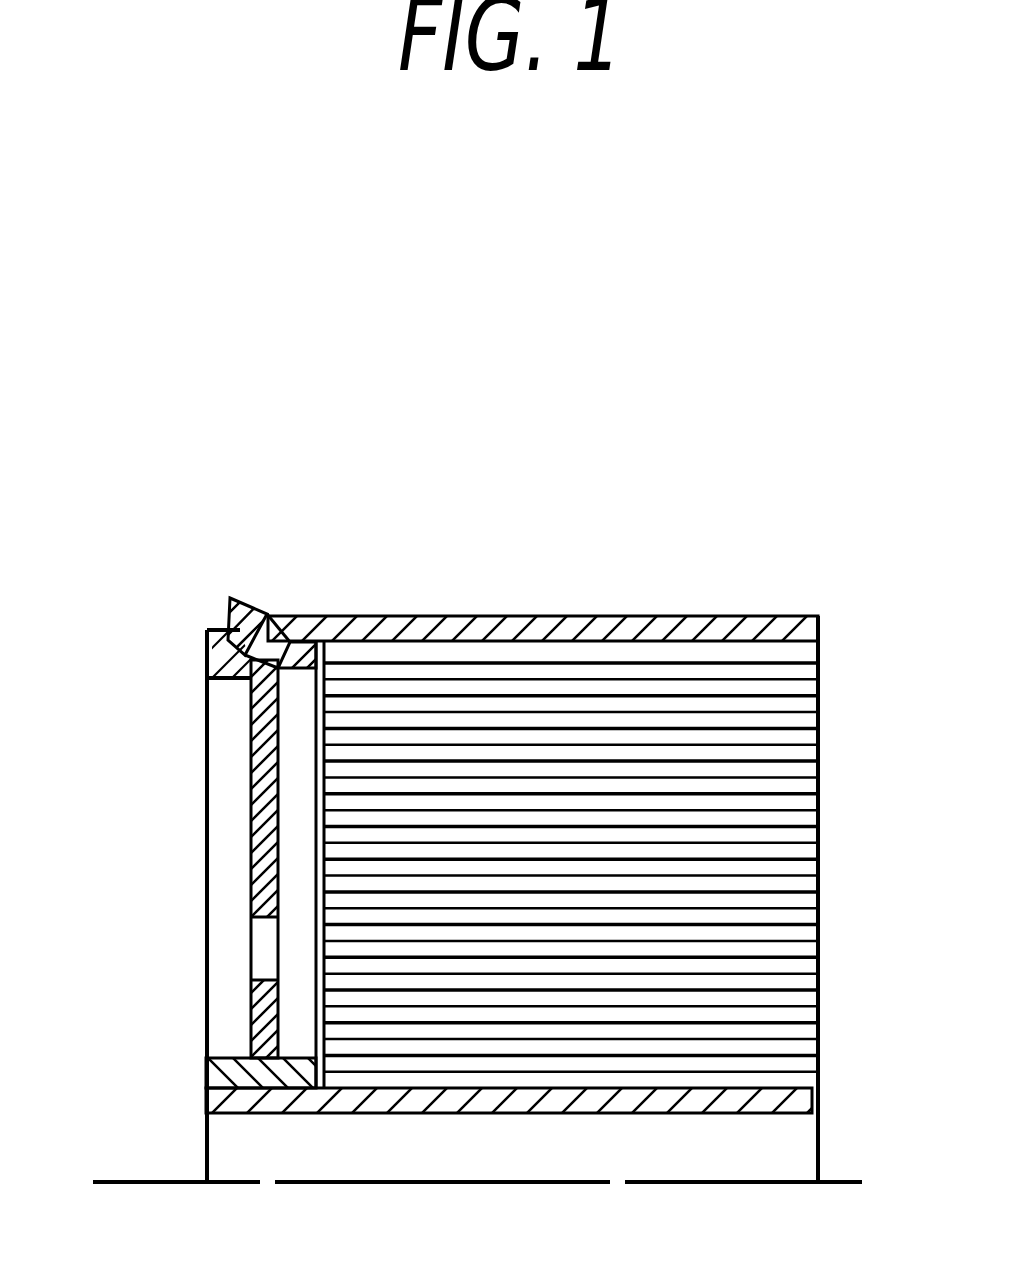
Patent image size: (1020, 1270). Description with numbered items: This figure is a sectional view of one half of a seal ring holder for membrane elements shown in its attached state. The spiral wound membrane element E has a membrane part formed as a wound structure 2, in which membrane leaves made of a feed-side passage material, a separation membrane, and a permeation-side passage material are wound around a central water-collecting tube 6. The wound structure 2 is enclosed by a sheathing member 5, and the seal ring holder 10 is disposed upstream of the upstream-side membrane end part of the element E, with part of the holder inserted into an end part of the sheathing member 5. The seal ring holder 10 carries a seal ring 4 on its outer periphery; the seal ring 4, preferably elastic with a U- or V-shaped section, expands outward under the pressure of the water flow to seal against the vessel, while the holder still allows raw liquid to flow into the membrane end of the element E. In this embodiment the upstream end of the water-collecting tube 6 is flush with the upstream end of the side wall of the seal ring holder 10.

The wound structure 2 is at (567, 762).
The seal ring 4 is at (232, 606).
The sheathing member 5 is at (705, 616).
The water-collecting tube 6 is at (205, 1098).
The seal ring holder 10 is at (226, 846).
The spiral wound membrane element E is at (480, 582).